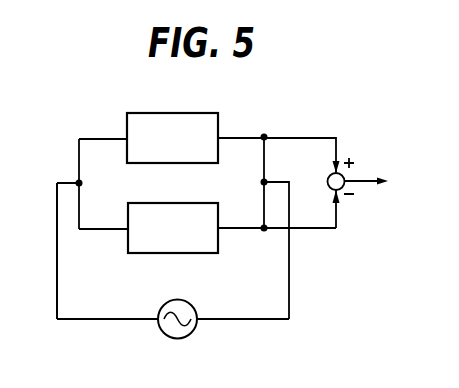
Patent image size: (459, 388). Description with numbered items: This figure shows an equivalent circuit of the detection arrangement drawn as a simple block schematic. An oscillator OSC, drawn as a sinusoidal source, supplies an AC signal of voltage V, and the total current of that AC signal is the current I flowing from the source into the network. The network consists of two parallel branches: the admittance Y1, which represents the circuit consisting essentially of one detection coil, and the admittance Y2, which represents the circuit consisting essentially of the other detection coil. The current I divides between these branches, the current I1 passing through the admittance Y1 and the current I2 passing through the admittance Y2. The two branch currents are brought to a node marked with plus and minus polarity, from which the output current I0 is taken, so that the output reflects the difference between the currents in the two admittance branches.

The admittance Y1 is at (172, 138).
The admittance Y2 is at (173, 228).
The current I1 is at (103, 121).
The current I2 is at (103, 249).
The current of AC signal I is at (45, 251).
The oscillator OSC is at (188, 332).
The voltage of AC signal V is at (206, 292).
The output current I0 is at (377, 187).